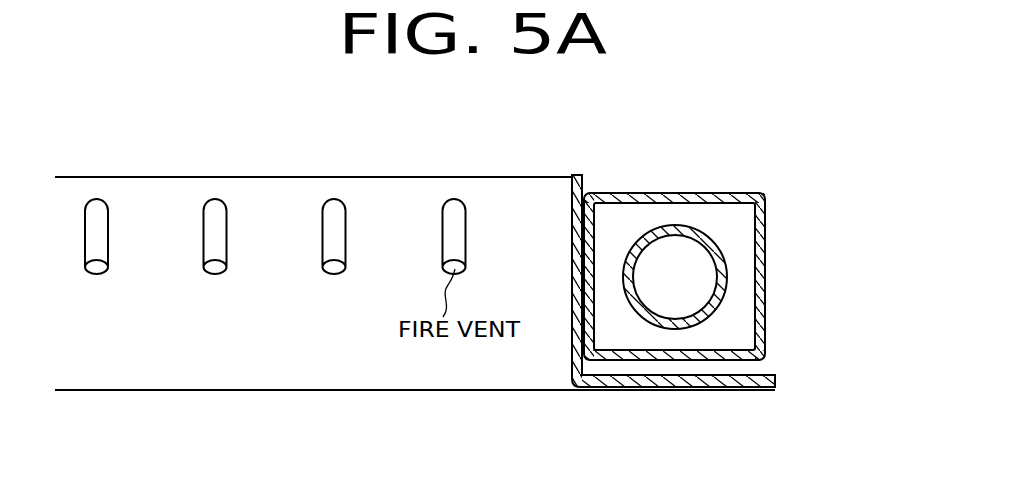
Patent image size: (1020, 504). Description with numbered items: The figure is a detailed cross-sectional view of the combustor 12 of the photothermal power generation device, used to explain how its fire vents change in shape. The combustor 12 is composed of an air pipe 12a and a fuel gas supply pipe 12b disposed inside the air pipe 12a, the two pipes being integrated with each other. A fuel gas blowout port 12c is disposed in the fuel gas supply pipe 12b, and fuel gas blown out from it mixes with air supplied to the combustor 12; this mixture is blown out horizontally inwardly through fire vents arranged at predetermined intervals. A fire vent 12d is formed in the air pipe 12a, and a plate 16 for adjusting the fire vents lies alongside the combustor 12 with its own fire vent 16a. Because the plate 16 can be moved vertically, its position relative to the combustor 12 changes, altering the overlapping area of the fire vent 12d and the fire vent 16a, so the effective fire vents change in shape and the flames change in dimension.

The combustor 12 is at (745, 299).
The air pipe 12a is at (711, 325).
The fuel gas supply pipe 12b is at (692, 230).
The fuel gas blowout port 12c is at (630, 280).
The fire vent 12d is at (592, 307).
The plate 16 is at (635, 260).
The fire vent 16a is at (578, 233).